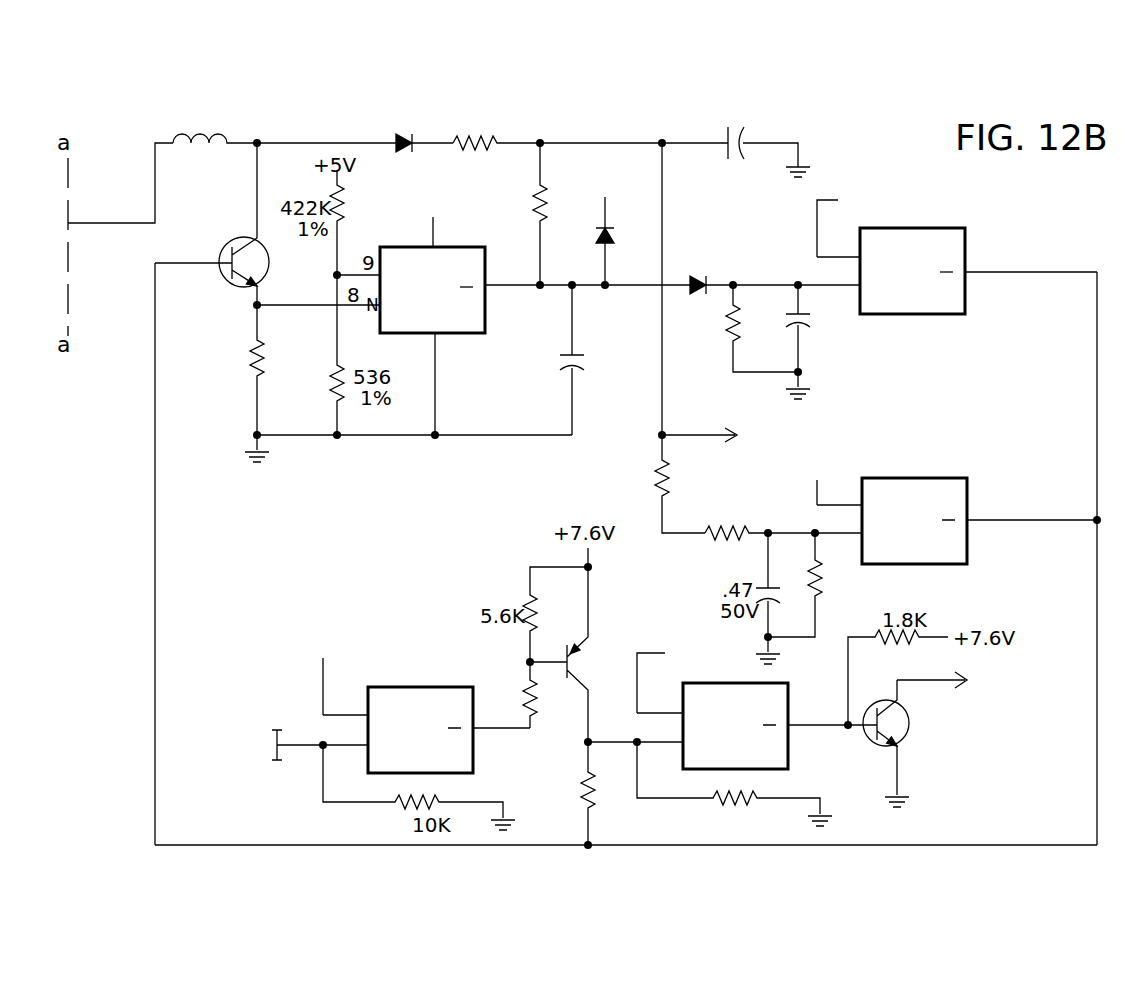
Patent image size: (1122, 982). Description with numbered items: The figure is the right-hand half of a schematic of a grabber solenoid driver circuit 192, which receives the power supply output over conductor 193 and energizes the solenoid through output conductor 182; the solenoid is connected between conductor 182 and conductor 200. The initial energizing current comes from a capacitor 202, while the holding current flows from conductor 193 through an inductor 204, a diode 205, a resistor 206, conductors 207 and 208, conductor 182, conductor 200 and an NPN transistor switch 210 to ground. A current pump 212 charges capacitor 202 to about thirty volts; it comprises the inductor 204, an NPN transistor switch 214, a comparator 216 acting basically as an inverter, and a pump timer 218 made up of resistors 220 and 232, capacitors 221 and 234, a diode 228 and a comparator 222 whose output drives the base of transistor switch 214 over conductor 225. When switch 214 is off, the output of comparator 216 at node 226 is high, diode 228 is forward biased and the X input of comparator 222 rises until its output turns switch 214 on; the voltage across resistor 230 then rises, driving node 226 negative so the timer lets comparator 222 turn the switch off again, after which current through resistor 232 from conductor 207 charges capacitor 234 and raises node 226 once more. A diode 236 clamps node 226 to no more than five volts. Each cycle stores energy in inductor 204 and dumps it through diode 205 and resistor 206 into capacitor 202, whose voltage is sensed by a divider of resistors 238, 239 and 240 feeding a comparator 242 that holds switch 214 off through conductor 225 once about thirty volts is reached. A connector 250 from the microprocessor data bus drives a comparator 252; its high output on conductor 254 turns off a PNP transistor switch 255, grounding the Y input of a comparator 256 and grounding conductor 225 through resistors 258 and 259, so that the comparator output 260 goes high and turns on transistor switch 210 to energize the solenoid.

The output conductor 182 is at (692, 422).
The driver circuit 192 is at (150, 537).
The conductor 193 is at (124, 222).
The conductor 200 is at (927, 679).
The capacitor 202 is at (721, 134).
The inductor 204 is at (214, 131).
The diode 205 is at (398, 138).
The resistor 206 is at (495, 135).
The conductor 207 is at (586, 143).
The conductor 208 is at (663, 234).
The transistor switch 210 is at (910, 710).
The current pump 212 is at (462, 450).
The NPN transistor switch 214 is at (229, 242).
The comparator 216 is at (489, 318).
The pump timer 218 is at (917, 337).
The resistor 220 is at (730, 338).
The capacitor 221 is at (813, 323).
The comparator 222 is at (946, 228).
The conductor 225 is at (1097, 398).
The node 226 is at (640, 288).
The diode 228 is at (698, 279).
The resistor 230 is at (266, 356).
The resistor 232 is at (548, 222).
The capacitor 234 is at (586, 370).
The diode 236 is at (600, 247).
The resistor 238 is at (671, 474).
The resistor 239 is at (717, 541).
The resistor 240 is at (811, 580).
The comparator 242 is at (929, 478).
The connector 250 is at (291, 728).
The comparator 252 is at (420, 687).
The conductor 254 is at (529, 729).
The PNP transistor switch 255 is at (581, 676).
The comparator 256 is at (776, 683).
The resistor 258 is at (584, 806).
The resistor 259 is at (720, 807).
The output 260 is at (854, 731).